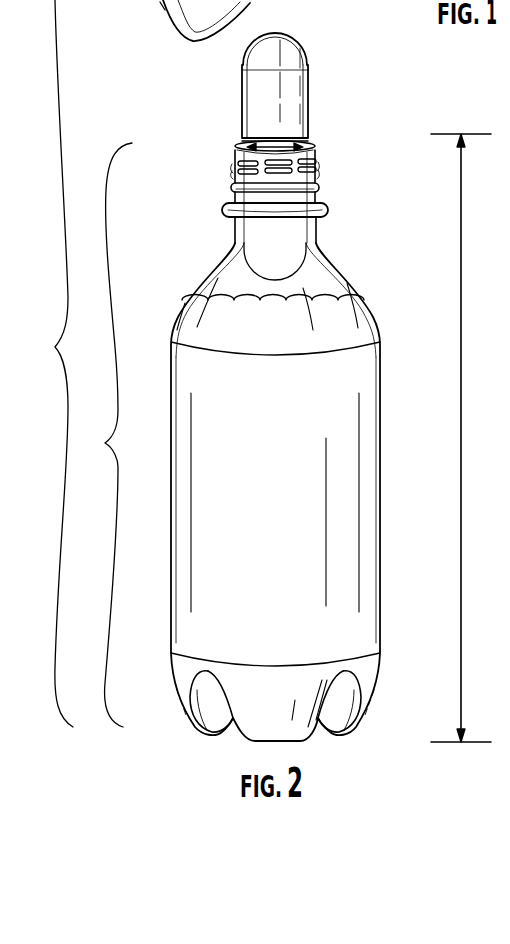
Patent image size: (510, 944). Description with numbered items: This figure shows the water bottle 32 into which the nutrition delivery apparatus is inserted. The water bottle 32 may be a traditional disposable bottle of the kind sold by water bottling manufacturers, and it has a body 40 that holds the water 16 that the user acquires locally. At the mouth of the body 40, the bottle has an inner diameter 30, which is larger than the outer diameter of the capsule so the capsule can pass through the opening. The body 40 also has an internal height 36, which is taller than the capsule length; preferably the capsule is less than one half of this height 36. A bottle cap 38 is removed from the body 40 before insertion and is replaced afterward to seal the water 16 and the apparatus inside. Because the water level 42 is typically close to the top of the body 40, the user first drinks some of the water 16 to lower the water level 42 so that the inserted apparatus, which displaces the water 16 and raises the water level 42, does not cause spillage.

In FIG. 2, the water 16 is at (347, 342).
In FIG. 2, the inner diameter 30 is at (273, 145).
In FIG. 2, the water bottle 32 is at (53, 363).
In FIG. 2, the internal height 36 is at (462, 343).
In FIG. 1, the bottle cap 38 is at (118, 52).
In FIG. 2, the body 40 is at (107, 435).
In FIG. 2, the water level 42 is at (310, 300).